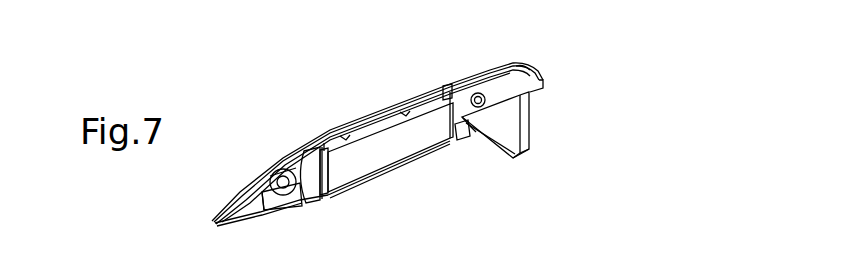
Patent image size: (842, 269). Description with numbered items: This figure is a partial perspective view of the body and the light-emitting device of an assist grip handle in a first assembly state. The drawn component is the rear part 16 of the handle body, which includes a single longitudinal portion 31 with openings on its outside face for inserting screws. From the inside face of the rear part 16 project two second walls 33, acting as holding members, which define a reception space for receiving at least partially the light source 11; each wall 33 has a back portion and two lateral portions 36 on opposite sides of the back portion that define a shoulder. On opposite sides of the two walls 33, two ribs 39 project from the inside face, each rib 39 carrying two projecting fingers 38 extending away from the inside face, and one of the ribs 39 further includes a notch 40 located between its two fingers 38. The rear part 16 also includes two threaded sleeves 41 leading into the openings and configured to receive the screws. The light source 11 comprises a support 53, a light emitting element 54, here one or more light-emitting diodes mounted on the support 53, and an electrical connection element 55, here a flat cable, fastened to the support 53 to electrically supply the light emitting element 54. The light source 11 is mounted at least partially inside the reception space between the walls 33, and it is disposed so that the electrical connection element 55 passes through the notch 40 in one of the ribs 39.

The light source 11 is at (343, 180).
The rear part 16 is at (527, 62).
The single longitudinal portion 31 is at (303, 150).
The second wall 33 is at (400, 100).
The lateral portion 36 is at (333, 128).
The projecting finger 38 is at (327, 193).
The rib 39 is at (309, 190).
The notch 40 is at (470, 128).
The sleeve 41 is at (253, 170).
The support 53 is at (440, 85).
The light emitting element 54 is at (373, 157).
The electrical connection element 55 is at (522, 127).